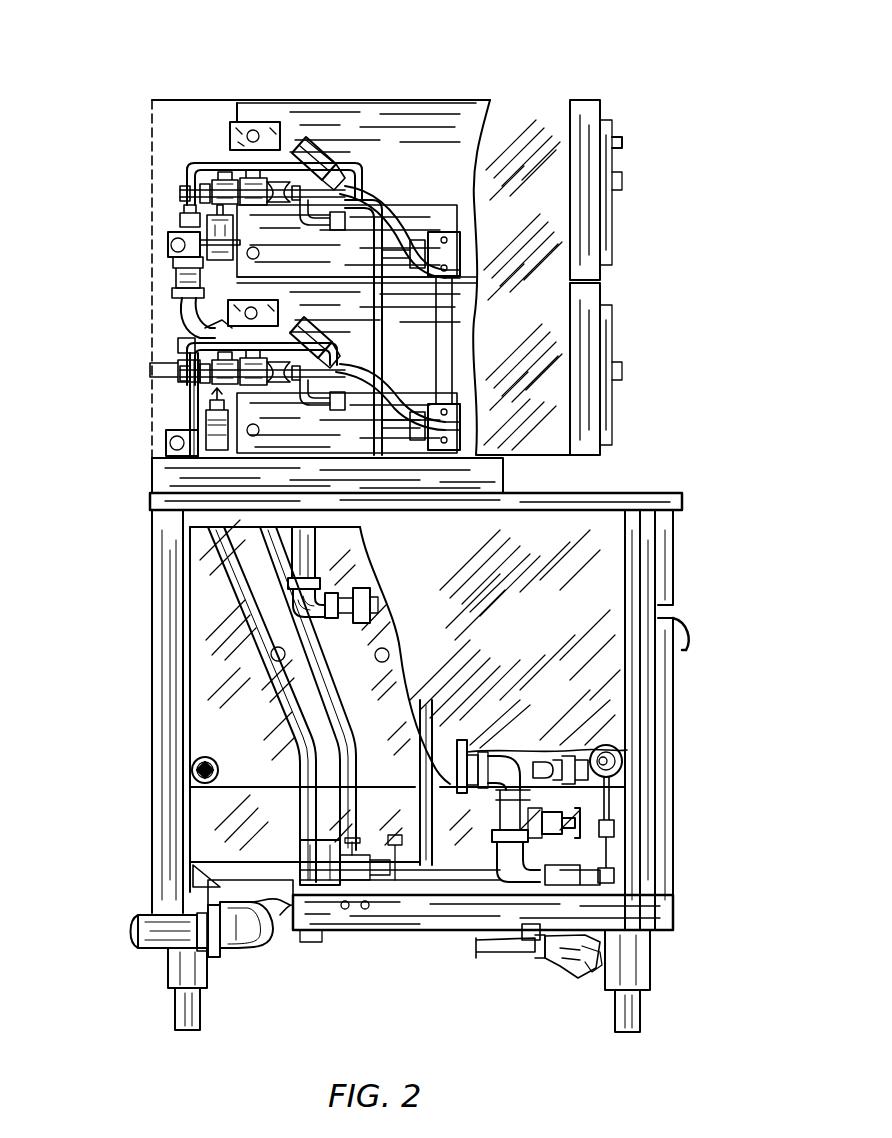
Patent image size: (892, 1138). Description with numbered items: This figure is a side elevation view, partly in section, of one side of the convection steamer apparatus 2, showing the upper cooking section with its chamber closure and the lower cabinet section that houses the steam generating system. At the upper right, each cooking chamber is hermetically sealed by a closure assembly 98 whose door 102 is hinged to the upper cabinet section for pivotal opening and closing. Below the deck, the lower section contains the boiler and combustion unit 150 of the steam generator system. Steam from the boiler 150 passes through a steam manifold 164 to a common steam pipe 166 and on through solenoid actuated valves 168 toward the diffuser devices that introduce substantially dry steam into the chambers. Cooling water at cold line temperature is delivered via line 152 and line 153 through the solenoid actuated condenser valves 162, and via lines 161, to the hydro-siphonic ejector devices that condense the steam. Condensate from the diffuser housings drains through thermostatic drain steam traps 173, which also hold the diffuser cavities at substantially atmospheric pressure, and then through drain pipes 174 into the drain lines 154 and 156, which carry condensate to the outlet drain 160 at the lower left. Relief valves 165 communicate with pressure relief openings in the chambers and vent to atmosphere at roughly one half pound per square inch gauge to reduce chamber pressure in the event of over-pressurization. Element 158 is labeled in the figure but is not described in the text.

The convection steamer apparatus 2 is at (538, 82).
The closure assembly 98 is at (618, 145).
The door 102 is at (606, 232).
The boiler and combustion unit 150 is at (220, 632).
The line 152 is at (426, 768).
The line 153 is at (350, 186).
The drain line 154 is at (300, 718).
The drain line 156 is at (316, 675).
The valve assembly 158 is at (520, 882).
The outlet drain 160 is at (153, 933).
The line 161 is at (185, 168).
The solenoid actuated condenser valve 162 is at (270, 140).
The steam manifold 164 is at (308, 559).
The relief valve 165 is at (170, 245).
The common steam pipe 166 is at (382, 210).
The solenoid actuated valve 168 is at (318, 160).
The thermostatic drain steam trap 173 is at (200, 220).
The drain pipe 174 is at (175, 298).